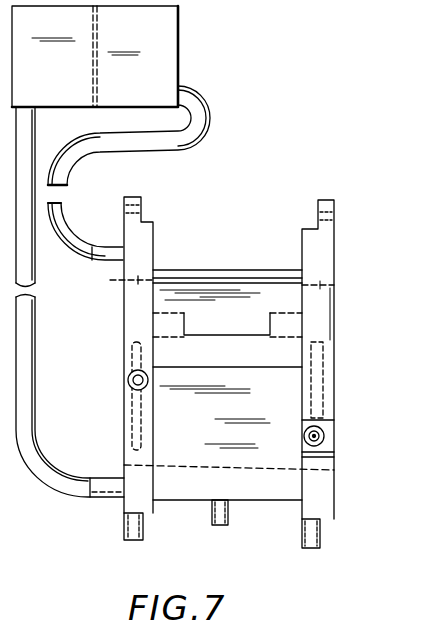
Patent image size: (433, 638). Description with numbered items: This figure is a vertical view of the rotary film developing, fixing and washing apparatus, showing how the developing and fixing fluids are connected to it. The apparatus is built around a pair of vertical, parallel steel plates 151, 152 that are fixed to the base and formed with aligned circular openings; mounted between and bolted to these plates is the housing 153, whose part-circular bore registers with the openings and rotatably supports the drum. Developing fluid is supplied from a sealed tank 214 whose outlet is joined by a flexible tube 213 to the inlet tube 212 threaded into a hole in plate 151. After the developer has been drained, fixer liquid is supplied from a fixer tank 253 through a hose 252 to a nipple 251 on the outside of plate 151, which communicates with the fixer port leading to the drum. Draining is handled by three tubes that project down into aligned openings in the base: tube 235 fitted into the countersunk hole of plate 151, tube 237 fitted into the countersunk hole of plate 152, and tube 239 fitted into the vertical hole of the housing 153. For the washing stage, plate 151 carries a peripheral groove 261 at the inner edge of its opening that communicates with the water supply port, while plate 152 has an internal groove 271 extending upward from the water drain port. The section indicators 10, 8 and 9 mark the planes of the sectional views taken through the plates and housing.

The sealed tank 214 is at (165, 64).
The fixer tank 253 is at (62, 89).
The flexible tube 213 is at (203, 140).
The inlet tube 212 is at (108, 266).
The hose 252 is at (27, 388).
The nipple 251 is at (106, 477).
The steel plate 151 is at (150, 250).
The steel plate 152 is at (322, 249).
The housing 153 is at (273, 492).
The peripheral groove 261 is at (124, 419).
The internal groove 271 is at (336, 382).
The tube 235 is at (129, 544).
The tube 237 is at (323, 532).
The tube 239 is at (229, 516).
The section line 10 is at (122, 183).
The section line 8 is at (156, 190).
The section line 9 is at (345, 170).